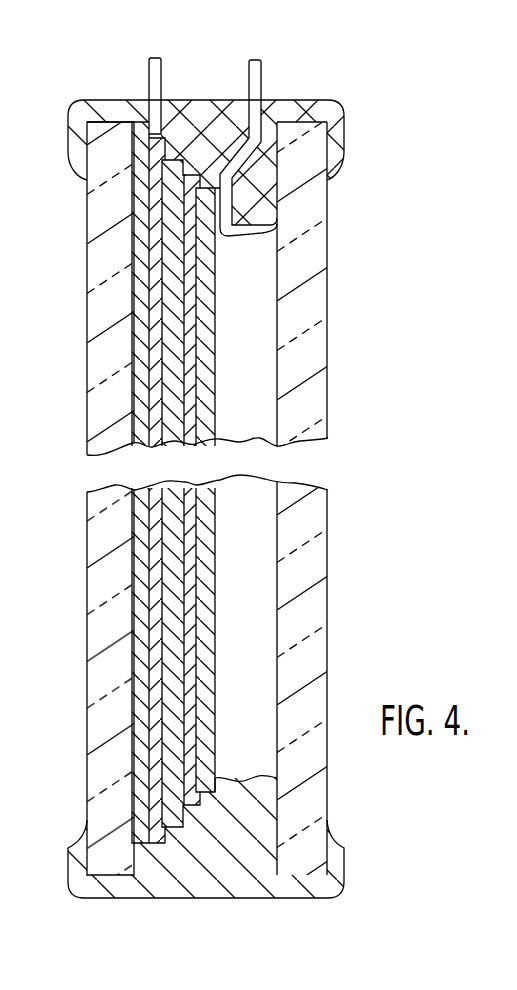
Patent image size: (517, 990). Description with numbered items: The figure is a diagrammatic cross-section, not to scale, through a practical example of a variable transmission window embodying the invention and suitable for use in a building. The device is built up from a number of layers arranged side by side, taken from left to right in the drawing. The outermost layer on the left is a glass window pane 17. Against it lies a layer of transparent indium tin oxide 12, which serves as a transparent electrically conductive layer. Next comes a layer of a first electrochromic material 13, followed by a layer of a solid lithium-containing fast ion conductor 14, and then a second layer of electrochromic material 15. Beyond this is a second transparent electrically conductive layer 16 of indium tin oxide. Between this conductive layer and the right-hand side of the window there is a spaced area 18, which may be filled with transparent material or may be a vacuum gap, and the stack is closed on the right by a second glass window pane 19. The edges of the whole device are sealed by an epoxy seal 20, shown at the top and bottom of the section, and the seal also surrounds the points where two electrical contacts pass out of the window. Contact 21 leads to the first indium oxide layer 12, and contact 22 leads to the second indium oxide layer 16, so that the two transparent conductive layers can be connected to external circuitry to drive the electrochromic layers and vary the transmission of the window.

The layer of transparent indium tin oxide 12 is at (140, 135).
The layer of a first electrochromic material 13 is at (188, 180).
The layer of a solid lithium-containing fast ion conductor 14 is at (172, 212).
The second layer of electrochromic material 15 is at (193, 290).
The second transparent electrically conductive layer 16 is at (208, 377).
The glass window pane 17 is at (110, 160).
The spaced area 18 is at (240, 620).
The second glass window pane 19 is at (298, 660).
The epoxy seal 20 is at (200, 116).
The contact 21 is at (154, 73).
The contact 22 is at (257, 70).